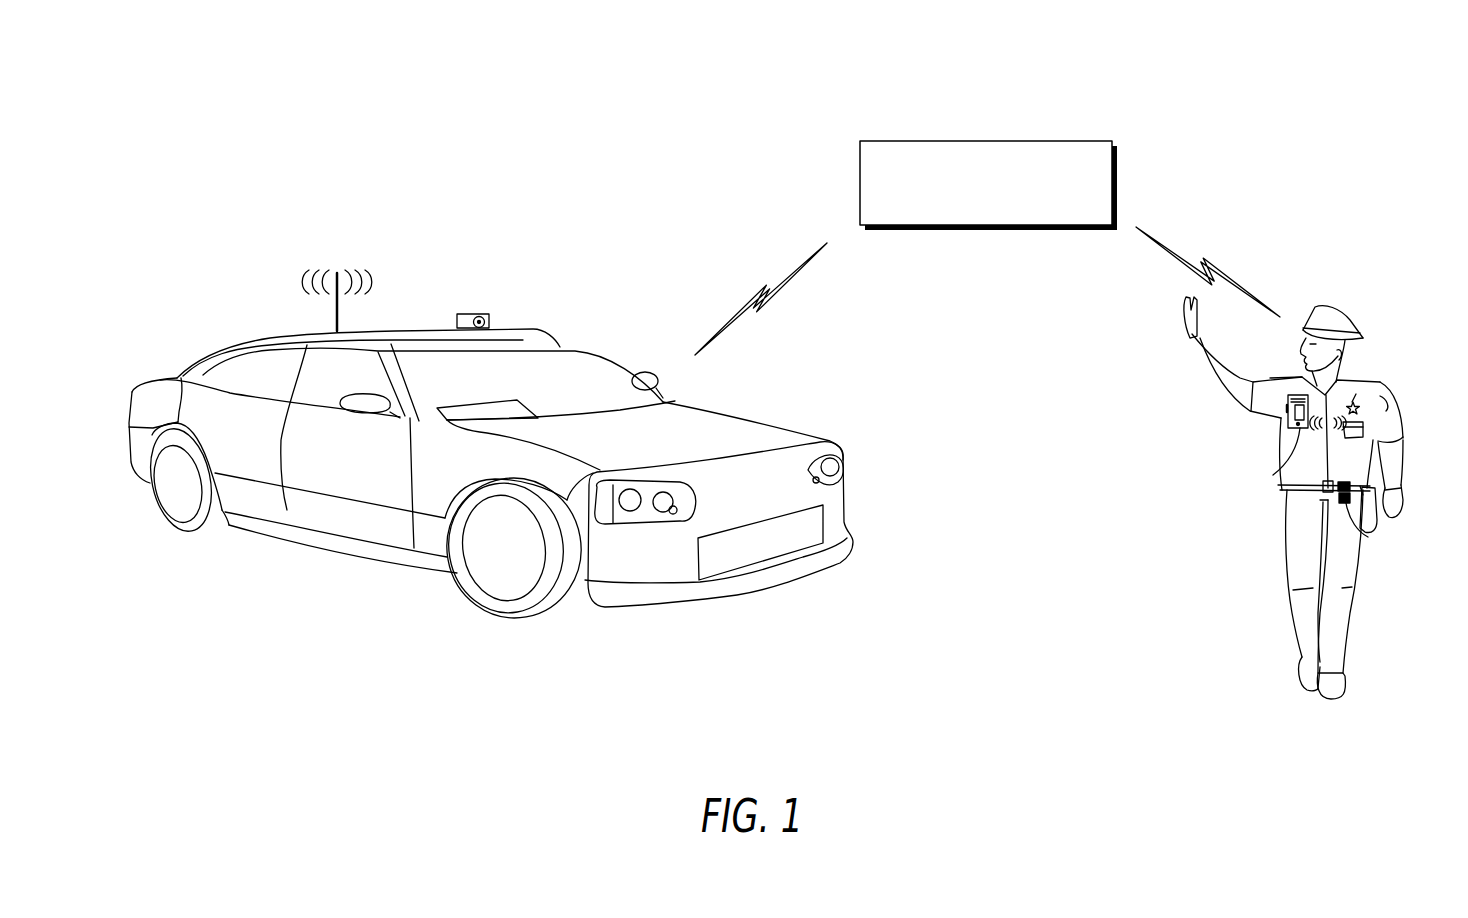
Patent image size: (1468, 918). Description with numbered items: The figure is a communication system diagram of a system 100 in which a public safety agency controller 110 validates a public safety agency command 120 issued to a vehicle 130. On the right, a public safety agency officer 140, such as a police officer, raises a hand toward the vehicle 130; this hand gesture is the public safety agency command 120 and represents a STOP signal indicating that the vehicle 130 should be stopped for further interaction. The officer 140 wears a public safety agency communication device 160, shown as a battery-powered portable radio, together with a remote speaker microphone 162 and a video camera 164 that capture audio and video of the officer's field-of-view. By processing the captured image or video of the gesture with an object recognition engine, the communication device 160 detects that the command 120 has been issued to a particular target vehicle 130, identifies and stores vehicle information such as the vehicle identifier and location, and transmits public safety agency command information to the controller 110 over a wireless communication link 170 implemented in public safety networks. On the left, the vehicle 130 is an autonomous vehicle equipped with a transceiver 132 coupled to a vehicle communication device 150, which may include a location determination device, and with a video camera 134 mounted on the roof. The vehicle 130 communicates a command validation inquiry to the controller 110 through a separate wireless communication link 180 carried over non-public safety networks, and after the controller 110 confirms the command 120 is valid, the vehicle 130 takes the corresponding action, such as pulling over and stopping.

The system 100 is at (1362, 120).
The public safety agency controller 110 is at (1112, 190).
The public safety agency command 120 is at (1173, 296).
The vehicle 130 is at (163, 345).
The transceiver 132 is at (302, 266).
The video camera 134 is at (477, 313).
The public safety agency officer 140 is at (1372, 354).
The vehicle communication device 150 is at (437, 412).
The public safety agency communication device 160 is at (1368, 537).
The remote speaker microphone 162 is at (1302, 393).
The video camera 164 is at (1273, 475).
The wireless communication link 170 is at (1168, 245).
The wireless communication link 180 is at (795, 270).